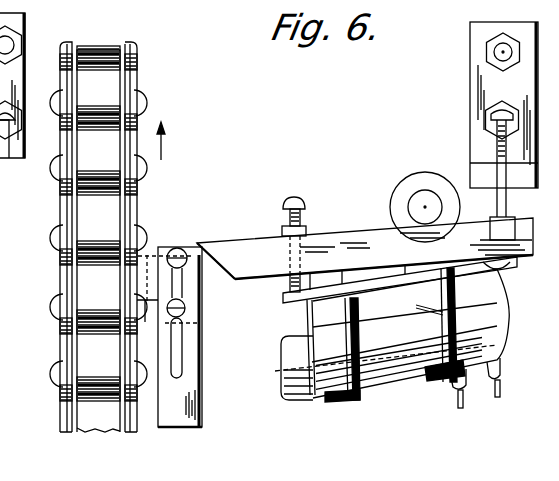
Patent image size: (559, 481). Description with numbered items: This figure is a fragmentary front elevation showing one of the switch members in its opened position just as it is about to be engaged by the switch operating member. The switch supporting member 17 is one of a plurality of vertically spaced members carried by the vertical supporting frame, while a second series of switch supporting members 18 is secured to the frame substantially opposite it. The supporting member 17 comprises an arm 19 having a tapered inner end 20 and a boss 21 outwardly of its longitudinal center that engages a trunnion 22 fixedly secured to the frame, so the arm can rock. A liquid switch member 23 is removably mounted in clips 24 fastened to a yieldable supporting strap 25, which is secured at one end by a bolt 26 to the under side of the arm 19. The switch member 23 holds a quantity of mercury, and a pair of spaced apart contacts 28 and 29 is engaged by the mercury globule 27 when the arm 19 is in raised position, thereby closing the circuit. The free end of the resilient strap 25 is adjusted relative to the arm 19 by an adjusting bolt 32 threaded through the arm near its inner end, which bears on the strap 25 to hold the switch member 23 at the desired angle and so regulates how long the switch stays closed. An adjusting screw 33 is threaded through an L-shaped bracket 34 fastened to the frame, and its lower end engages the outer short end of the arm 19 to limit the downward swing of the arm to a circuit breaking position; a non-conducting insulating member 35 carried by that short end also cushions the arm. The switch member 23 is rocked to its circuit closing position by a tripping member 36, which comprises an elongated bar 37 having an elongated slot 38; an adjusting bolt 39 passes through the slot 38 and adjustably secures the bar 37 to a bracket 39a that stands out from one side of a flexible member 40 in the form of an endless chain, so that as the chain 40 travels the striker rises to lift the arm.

The switch supporting member 17 is at (366, 228).
The switch supporting member 18 is at (116, 4).
The arm 19 is at (343, 234).
The tapered inner end 20 is at (228, 262).
The boss 21 is at (413, 173).
The trunnion 22 is at (441, 190).
The liquid switch member 23 is at (501, 336).
The clips 24 is at (433, 381).
The yieldable supporting strap 25 is at (447, 273).
The bolt 26 is at (503, 263).
The globule 27 is at (283, 352).
The contact 28 is at (465, 403).
The contact 29 is at (501, 388).
The adjusting bolt 32 is at (302, 197).
The adjusting screw 33 is at (17, 129).
The L-shaped bracket 34 is at (20, 68).
The insulating member 35 is at (493, 230).
The tripping member 36 is at (203, 367).
The elongated bar 37 is at (204, 413).
The elongated slot 38 is at (163, 276).
The adjusting bolt 39 is at (187, 265).
The bracket 39a is at (203, 312).
The flexible member 40 is at (60, 391).